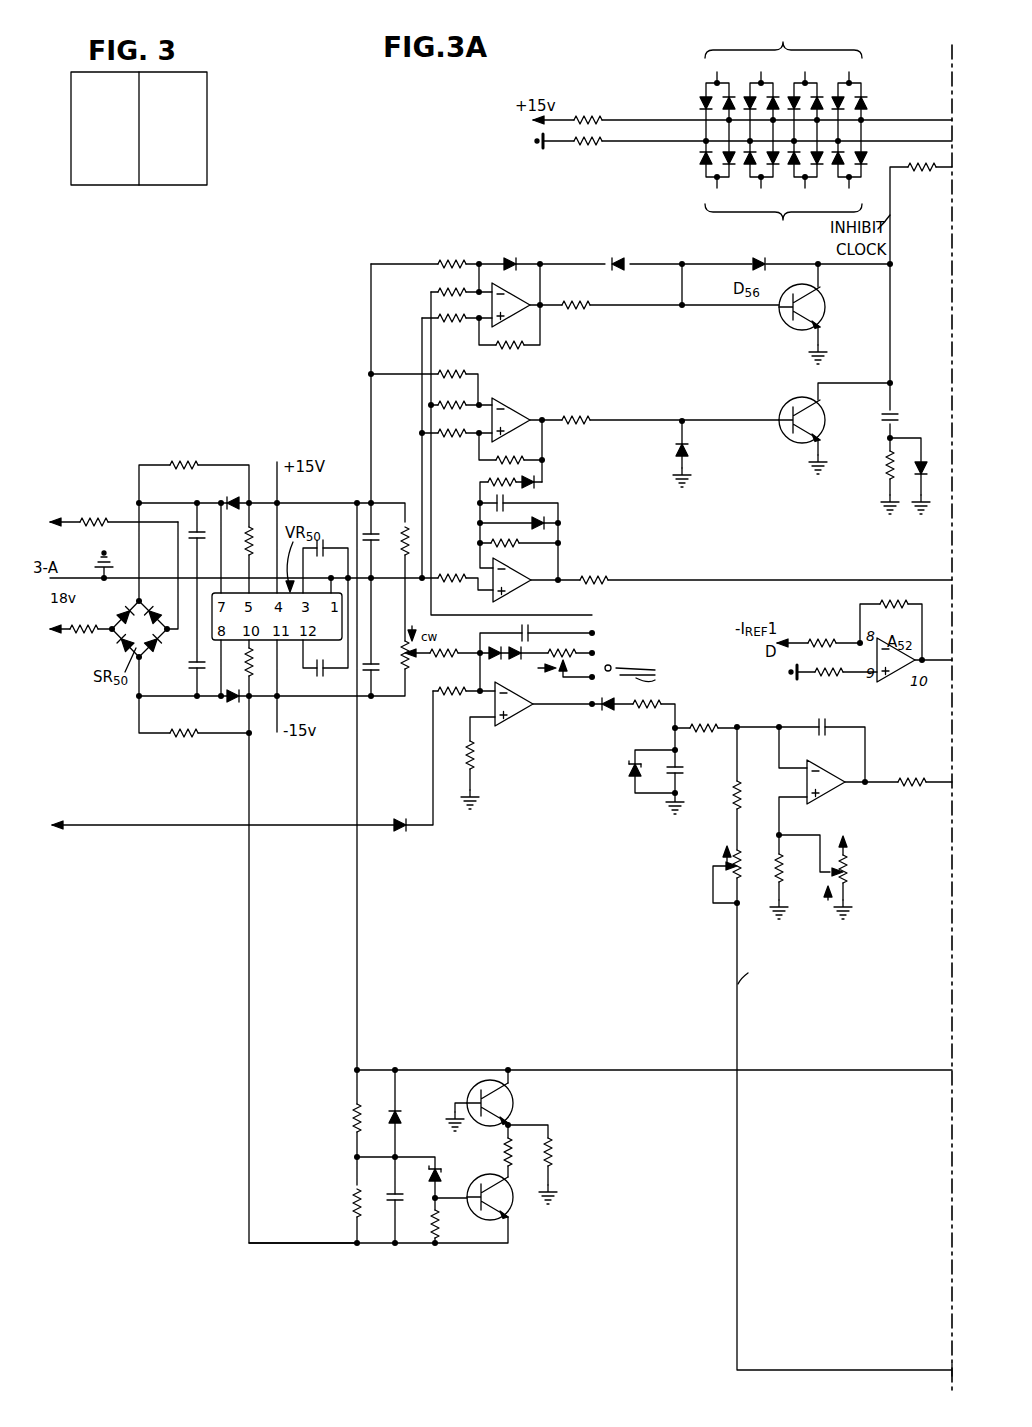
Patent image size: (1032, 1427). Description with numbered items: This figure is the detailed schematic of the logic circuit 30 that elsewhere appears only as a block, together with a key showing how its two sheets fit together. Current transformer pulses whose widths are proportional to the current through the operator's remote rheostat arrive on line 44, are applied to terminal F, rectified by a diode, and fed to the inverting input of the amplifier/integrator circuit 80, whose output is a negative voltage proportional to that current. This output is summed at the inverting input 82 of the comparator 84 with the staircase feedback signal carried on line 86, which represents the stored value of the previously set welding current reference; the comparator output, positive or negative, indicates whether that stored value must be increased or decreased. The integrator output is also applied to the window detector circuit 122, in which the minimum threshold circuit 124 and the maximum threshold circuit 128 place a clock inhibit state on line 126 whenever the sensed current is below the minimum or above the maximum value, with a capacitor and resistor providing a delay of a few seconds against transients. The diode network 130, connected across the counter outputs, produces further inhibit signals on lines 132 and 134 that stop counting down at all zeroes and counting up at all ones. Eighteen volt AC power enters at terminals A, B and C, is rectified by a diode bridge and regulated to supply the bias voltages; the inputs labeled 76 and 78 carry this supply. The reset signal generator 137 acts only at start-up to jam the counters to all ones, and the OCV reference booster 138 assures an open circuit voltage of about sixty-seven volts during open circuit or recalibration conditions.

In FIG. 3, the logic circuit 30 is at (200, 213).
In FIG. 3A, the line 44 is at (54, 830).
In FIG. 3A, the 2-C 18v input 76 is at (55, 516).
In FIG. 3A, the 4-B 18v input 78 is at (57, 637).
In FIG. 3A, the amplifier/integrator circuit 80 is at (552, 819).
In FIG. 3A, the inverting input 82 is at (752, 708).
In FIG. 3A, the comparator 84 is at (950, 882).
In FIG. 3A, the line 86 is at (738, 1018).
In FIG. 3A, the window detector circuit 122 is at (727, 384).
In FIG. 3A, the minimum threshold circuit 124 is at (503, 248).
In FIG. 3A, the line 126 is at (892, 314).
In FIG. 3A, the maximum threshold circuit 128 is at (458, 426).
In FIG. 3A, the diode network 130 is at (848, 51).
In FIG. 3A, the line 132 is at (885, 119).
In FIG. 3A, the line 134 is at (885, 141).
In FIG. 3A, the reset signal generator 137 is at (686, 1165).
In FIG. 3A, the OCV reference booster 138 is at (548, 568).